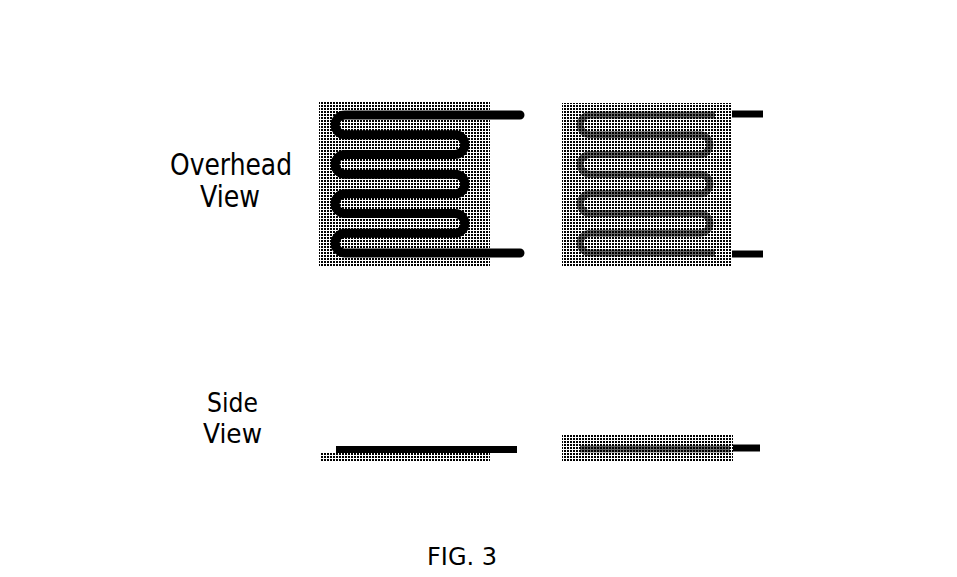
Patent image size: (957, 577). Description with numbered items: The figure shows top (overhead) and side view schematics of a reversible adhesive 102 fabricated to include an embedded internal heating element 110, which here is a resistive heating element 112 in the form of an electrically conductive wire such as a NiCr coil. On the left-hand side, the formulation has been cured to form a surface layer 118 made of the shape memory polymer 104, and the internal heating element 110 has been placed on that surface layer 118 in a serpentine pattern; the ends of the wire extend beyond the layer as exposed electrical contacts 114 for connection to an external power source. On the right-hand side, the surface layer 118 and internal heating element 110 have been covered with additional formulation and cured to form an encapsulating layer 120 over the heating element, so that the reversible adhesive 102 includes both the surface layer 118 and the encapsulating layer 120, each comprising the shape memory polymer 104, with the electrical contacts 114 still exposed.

The reversible adhesive 102 is at (556, 236).
The shape memory polymer 104 is at (677, 90).
The internal heating element 110 is at (585, 288).
The resistive heating element 112 is at (447, 111).
The exposed electrical contacts 114 is at (760, 257).
The surface layer 118 is at (322, 266).
The encapsulating layer 120 is at (575, 108).